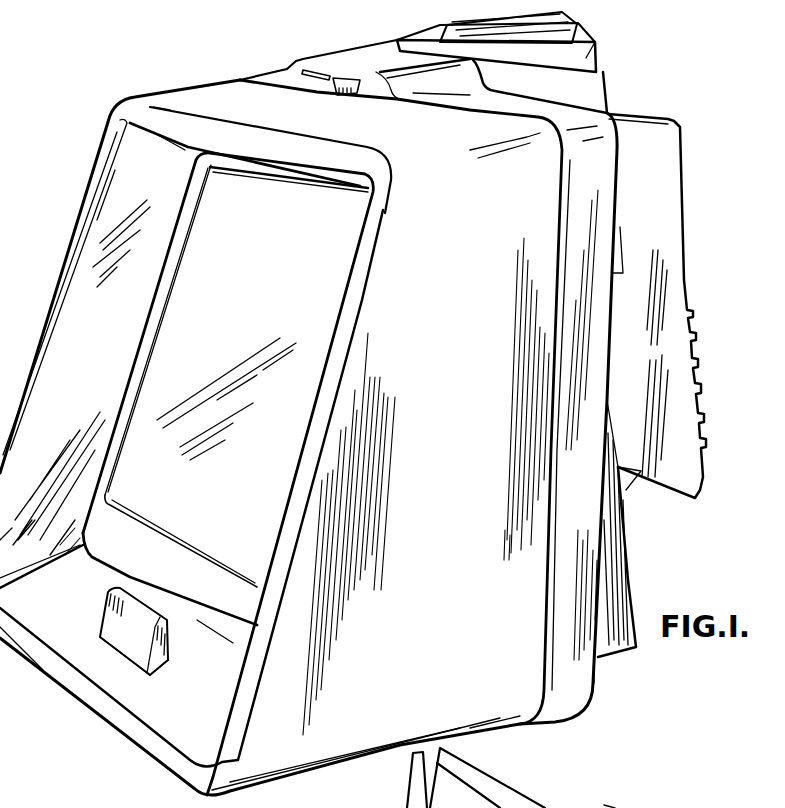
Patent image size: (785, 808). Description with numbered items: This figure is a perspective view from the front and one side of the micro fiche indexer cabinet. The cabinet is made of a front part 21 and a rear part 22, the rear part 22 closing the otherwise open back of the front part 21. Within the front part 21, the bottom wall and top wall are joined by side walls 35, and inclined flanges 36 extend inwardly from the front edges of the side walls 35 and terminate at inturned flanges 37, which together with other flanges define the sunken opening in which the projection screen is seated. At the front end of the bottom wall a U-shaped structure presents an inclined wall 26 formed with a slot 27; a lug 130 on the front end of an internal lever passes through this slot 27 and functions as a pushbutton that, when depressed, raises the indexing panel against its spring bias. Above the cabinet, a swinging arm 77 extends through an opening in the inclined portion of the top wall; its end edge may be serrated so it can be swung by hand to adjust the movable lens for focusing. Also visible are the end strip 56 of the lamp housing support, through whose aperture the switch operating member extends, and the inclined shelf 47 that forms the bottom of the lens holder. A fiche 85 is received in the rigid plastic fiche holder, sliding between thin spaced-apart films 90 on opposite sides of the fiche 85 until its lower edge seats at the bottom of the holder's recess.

The front part 21 is at (496, 707).
The rear part 22 is at (578, 672).
The inclined wall 26 is at (82, 656).
The slot 27 is at (158, 664).
The side walls 35 is at (350, 747).
The inclined flanges 36 is at (86, 292).
The inturned flanges 37 is at (150, 352).
The inclined shelf 47 is at (610, 807).
The end strip 56 is at (596, 47).
The swinging arm 77 is at (338, 84).
The fiche 85 is at (598, 97).
The films 90 is at (662, 158).
The lug 130 is at (103, 609).